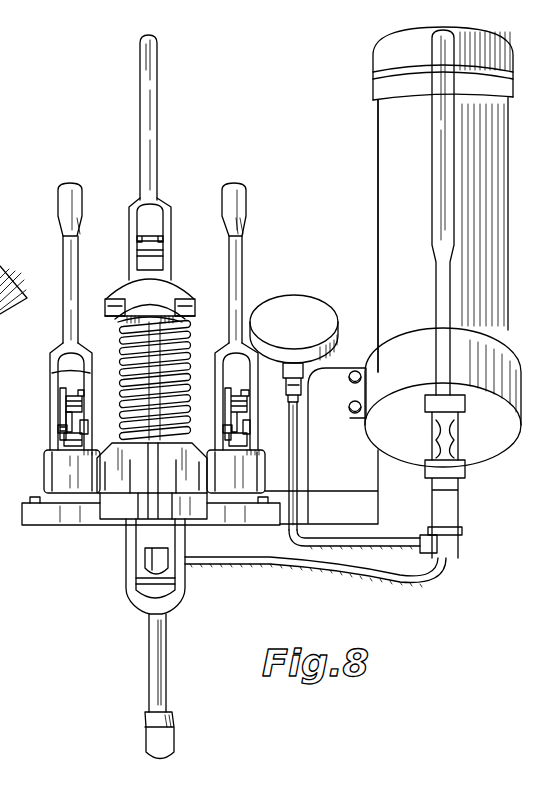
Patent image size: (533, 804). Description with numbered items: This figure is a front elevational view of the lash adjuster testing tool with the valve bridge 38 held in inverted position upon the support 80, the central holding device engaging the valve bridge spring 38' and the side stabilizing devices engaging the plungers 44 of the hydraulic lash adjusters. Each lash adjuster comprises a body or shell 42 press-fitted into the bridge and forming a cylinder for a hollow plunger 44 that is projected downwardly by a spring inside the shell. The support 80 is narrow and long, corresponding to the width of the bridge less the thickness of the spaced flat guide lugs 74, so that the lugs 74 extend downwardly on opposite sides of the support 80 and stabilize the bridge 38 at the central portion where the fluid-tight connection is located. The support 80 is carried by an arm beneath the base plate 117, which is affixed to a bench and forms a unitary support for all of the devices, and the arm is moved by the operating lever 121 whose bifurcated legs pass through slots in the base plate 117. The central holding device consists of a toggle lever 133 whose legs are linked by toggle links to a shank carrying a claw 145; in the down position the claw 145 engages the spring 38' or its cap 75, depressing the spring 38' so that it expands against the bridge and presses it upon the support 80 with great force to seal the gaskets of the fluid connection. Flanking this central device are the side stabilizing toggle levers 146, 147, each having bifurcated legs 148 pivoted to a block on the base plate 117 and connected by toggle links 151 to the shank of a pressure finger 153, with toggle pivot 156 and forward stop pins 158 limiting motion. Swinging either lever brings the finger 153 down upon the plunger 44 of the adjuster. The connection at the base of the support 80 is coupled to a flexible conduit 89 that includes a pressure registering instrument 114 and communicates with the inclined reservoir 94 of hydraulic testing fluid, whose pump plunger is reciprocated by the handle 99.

The toggle lever 133 is at (152, 111).
The claw 145 is at (168, 292).
The cap 75 is at (146, 303).
The valve bridge spring 38' is at (172, 378).
The valve bridge 38 is at (152, 468).
The guide lugs 74 is at (146, 503).
The support 80 is at (197, 507).
The base plate 117 is at (42, 523).
The operating lever 121 is at (149, 686).
The side stabilizing toggle lever 146 is at (71, 188).
The side stabilizing toggle lever 147 is at (238, 188).
The bifurcated legs 148 is at (58, 362).
The toggle links 151 is at (60, 407).
The toggle pivot 156 is at (71, 398).
The forward stop pins 158 is at (84, 428).
The pressure finger 153 is at (60, 429).
The plunger 44 is at (62, 442).
The body or shell 42 is at (44, 452).
The pressure registering instrument 114 is at (300, 312).
The reservoir 94 is at (386, 140).
The handle 99 is at (440, 151).
The flexible conduit 89 is at (372, 578).